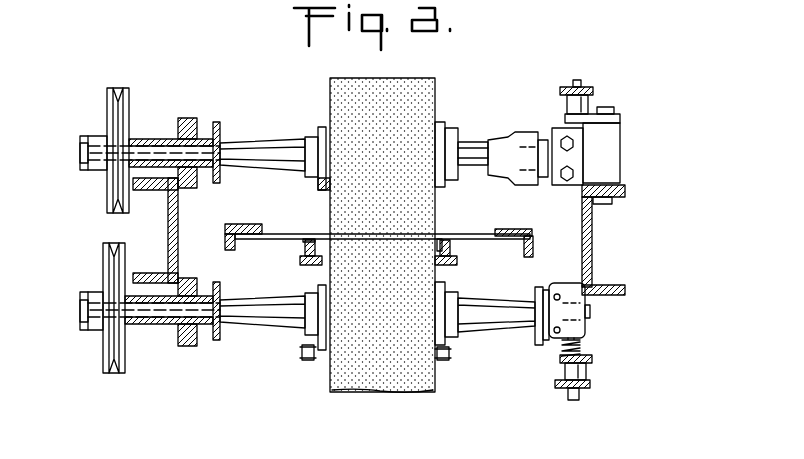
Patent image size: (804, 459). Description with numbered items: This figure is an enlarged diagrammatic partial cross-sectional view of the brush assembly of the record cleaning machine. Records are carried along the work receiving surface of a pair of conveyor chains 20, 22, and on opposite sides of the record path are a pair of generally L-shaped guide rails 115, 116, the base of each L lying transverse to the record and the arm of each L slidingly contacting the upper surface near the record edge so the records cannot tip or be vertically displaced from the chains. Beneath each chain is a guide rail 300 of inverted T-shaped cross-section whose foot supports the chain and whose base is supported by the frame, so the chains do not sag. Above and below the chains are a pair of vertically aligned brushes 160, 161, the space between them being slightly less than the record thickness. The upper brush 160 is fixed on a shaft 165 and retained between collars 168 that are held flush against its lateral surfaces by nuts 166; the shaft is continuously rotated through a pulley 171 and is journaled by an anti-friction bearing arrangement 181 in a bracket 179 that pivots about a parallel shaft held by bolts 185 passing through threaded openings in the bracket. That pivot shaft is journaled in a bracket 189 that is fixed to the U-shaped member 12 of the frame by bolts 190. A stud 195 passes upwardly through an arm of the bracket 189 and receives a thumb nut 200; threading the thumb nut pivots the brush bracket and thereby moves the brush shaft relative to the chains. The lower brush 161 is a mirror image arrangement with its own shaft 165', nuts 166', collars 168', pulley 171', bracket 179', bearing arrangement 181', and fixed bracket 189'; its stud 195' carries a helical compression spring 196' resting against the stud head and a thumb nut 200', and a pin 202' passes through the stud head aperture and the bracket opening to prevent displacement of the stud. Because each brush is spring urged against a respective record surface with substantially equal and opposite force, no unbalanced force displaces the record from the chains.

The U-shaped member 12 is at (167, 232).
The conveyor chain 20 is at (455, 243).
The conveyor chain 22 is at (298, 245).
The guide rail 115 is at (257, 224).
The guide rail 116 is at (532, 250).
The brush 160 is at (420, 80).
The brush 161 is at (346, 392).
The shaft 165 is at (262, 131).
The nut 166 is at (385, 126).
The collar 168 is at (396, 121).
The pulley 171 is at (104, 127).
The bracket 179 is at (154, 129).
The anti-friction bearing arrangement 181 is at (199, 129).
The bolt 185 is at (556, 135).
The bracket 189 is at (616, 148).
The bolt 190 is at (614, 110).
The stud 195 is at (600, 69).
The thumb nut 200 is at (604, 93).
The guide rail 300 is at (302, 264).
The shaft 165' is at (262, 348).
The nut 166' is at (381, 324).
The collar 168' is at (376, 346).
The pulley 171' is at (87, 313).
The bracket 179' is at (154, 330).
The anti-friction bearing arrangement 181' is at (205, 324).
The bracket 189' is at (642, 334).
The stud 195' is at (573, 408).
The helical spring 196' is at (607, 353).
The thumb nut 200' is at (598, 387).
The pin 202' is at (567, 314).